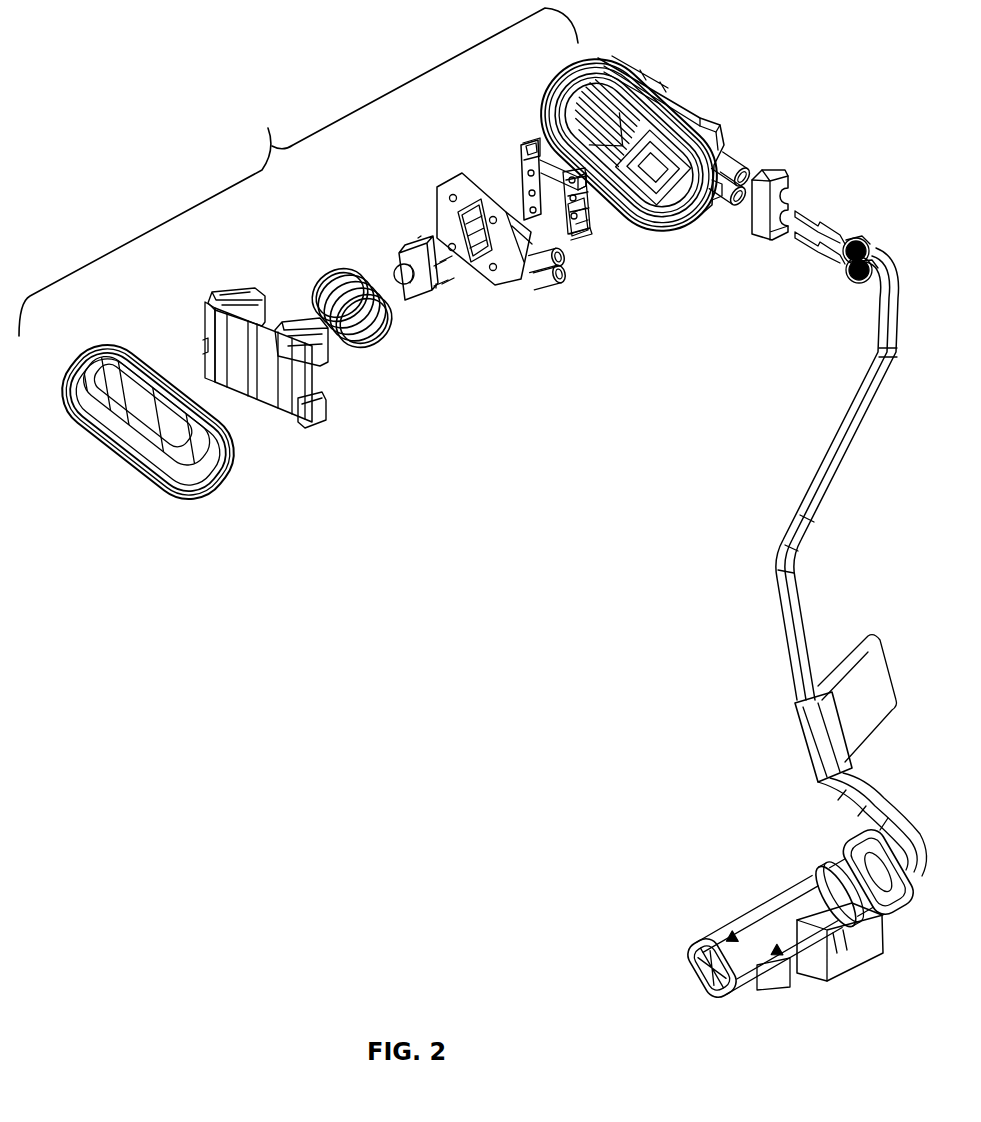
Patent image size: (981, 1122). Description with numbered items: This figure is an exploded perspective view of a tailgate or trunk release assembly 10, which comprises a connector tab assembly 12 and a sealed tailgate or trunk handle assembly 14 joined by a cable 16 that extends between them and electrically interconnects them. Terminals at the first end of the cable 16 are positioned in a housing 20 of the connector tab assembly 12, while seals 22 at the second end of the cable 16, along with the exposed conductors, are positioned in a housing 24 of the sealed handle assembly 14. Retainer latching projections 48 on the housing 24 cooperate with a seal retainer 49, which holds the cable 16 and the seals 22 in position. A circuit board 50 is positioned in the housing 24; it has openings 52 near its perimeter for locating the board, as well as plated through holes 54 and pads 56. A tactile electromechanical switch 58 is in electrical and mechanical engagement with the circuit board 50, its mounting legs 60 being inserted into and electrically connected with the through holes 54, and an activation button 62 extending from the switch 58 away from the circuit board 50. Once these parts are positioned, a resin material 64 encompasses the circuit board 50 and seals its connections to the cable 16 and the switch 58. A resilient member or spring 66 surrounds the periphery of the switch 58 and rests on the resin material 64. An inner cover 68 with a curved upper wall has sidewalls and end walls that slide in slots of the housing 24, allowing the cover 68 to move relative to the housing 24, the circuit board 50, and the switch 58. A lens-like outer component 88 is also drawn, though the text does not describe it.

The tailgate or trunk release assembly 10 is at (632, 494).
The connector tab assembly 12 is at (856, 982).
The sealed tailgate or trunk handle assembly 14 is at (268, 128).
The cable 16 is at (858, 460).
The housing 20 is at (796, 885).
The seals 22 is at (876, 243).
The housing 24 is at (730, 106).
The retainer latching projections 48 is at (745, 158).
The seal retainer 49 is at (785, 166).
The circuit board 50 is at (608, 246).
The openings 52 is at (522, 158).
The plated through holes 54 is at (580, 236).
The pads 56 is at (604, 226).
The tactile electromechanical switch 58 is at (440, 312).
The mounting legs 60 is at (452, 276).
The activation button 62 is at (398, 258).
The resin material 64 is at (527, 282).
The resilient member or spring 66 is at (372, 340).
The inner cover 68 is at (287, 442).
The lens 88 is at (118, 494).